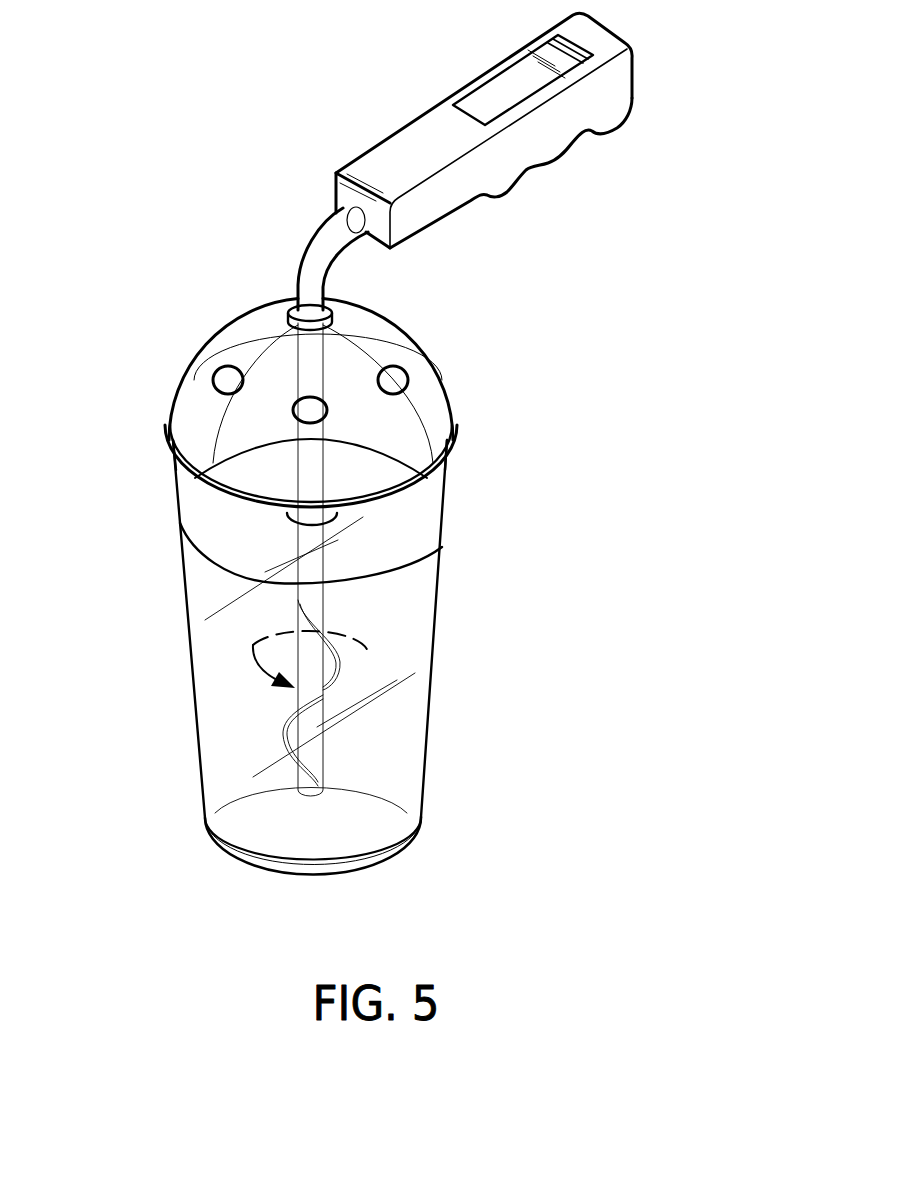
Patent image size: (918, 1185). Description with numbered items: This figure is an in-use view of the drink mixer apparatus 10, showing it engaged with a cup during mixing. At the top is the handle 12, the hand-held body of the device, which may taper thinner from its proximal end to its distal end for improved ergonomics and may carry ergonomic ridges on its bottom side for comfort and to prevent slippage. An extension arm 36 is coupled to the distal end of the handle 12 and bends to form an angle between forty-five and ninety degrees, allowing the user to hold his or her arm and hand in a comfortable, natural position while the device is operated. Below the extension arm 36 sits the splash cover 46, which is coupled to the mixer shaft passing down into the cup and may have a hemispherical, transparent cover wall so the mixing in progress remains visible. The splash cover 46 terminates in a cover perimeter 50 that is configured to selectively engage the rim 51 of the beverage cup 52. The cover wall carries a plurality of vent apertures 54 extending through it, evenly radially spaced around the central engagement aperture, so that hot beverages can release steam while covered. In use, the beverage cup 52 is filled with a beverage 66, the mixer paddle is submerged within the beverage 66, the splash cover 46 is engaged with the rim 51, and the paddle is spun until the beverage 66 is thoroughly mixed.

The drink mixer apparatus 10 is at (700, 337).
The handle 12 is at (392, 163).
The extension arm 36 is at (317, 252).
The splash cover 46 is at (210, 348).
The cover perimeter 50 is at (452, 445).
The rim 51 is at (428, 476).
The beverage cup 52 is at (430, 647).
The vent apertures 54 is at (228, 382).
The beverage 66 is at (210, 563).